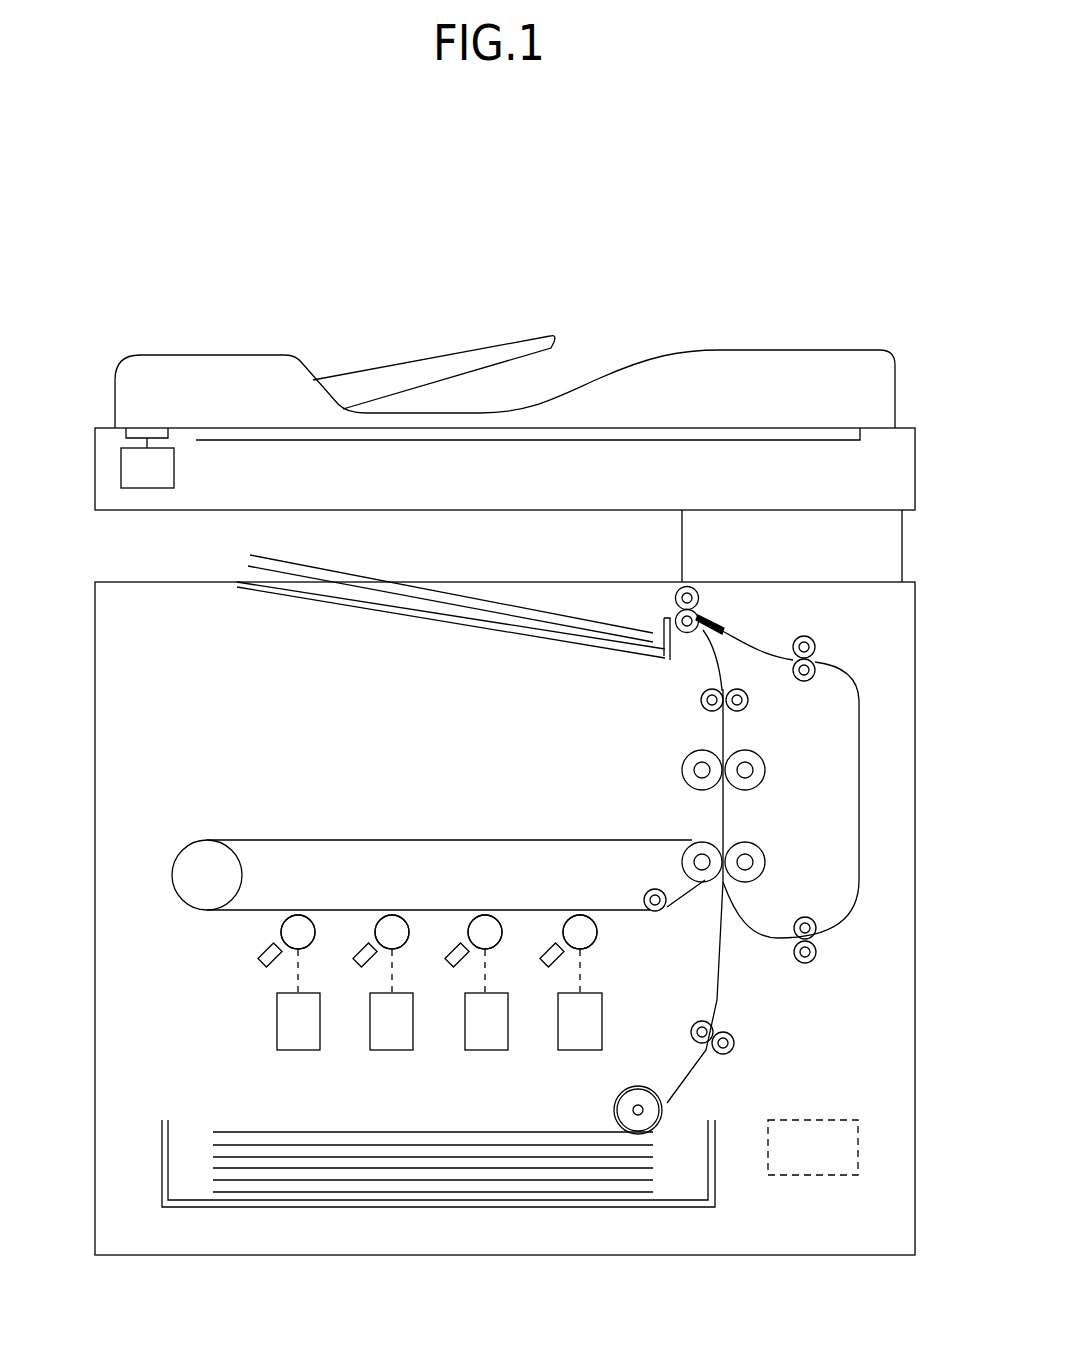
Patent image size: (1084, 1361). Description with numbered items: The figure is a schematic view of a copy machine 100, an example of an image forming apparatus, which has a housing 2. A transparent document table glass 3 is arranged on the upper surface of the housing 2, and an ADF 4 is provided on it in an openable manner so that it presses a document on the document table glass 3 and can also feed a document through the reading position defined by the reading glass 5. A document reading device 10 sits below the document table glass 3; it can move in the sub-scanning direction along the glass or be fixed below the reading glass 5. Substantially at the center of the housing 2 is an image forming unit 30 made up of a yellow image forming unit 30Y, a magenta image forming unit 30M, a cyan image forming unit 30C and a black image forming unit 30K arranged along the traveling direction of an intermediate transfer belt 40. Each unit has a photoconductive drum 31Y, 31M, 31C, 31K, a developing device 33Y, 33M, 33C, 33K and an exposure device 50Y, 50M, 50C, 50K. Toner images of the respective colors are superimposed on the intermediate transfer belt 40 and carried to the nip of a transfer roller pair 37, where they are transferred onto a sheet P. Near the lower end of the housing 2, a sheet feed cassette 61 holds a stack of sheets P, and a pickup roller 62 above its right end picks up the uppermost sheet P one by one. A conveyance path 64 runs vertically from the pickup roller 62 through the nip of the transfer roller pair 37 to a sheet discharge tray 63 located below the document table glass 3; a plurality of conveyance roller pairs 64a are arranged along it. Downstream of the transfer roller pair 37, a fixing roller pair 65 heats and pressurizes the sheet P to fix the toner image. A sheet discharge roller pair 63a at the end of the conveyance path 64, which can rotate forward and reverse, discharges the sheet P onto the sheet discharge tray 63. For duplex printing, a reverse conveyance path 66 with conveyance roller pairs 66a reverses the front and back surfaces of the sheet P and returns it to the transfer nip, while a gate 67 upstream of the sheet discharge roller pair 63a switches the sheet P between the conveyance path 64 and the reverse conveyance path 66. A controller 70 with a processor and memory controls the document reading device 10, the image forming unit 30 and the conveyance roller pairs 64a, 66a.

The copy machine 100 is at (534, 222).
The housing 2 is at (95, 670).
The document table glass 3 is at (716, 428).
The ADF (Automatic Document Feeder) 4 is at (220, 355).
The reading glass 5 is at (142, 429).
The document reading device 10 is at (131, 462).
The sheet discharge tray 63 is at (331, 587).
The sheet discharge roller pair 63a is at (683, 588).
The gate 67 is at (718, 625).
The conveyance roller pairs 66a is at (815, 640).
The reverse conveyance path 66 is at (863, 808).
The conveyance roller pairs 64a is at (700, 700).
The conveyance path 64 is at (718, 977).
The fixing roller pair 65 is at (710, 750).
The transfer roller pair 37 is at (705, 843).
The intermediate transfer belt 40 is at (449, 838).
The image forming unit 30 is at (628, 946).
The yellow image forming unit 30Y is at (250, 930).
The magenta image forming unit 30M is at (347, 898).
The cyan image forming unit 30C is at (516, 898).
The black image forming unit 30K is at (611, 898).
The photoconductive drum 31Y is at (298, 915).
The photoconductive drum 31M is at (392, 915).
The photoconductive drum 31C is at (485, 915).
The photoconductive drum 31K is at (580, 915).
The yellow developing device 33Y is at (262, 965).
The magenta developing device 33M is at (357, 965).
The cyan developing device 33C is at (450, 965).
The black developing device 33K is at (545, 965).
The exposure device 50Y is at (298, 1052).
The exposure device 50M is at (392, 1052).
The exposure device 50C is at (486, 1052).
The exposure device 50K is at (580, 1052).
The pickup roller 62 is at (640, 1086).
The sheet feed cassette 61 is at (162, 1157).
The controller 70 is at (814, 1177).
The sheet P is at (563, 612).